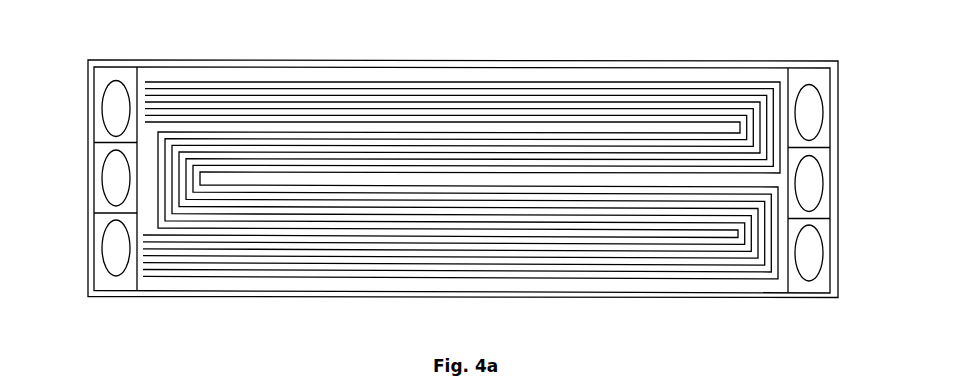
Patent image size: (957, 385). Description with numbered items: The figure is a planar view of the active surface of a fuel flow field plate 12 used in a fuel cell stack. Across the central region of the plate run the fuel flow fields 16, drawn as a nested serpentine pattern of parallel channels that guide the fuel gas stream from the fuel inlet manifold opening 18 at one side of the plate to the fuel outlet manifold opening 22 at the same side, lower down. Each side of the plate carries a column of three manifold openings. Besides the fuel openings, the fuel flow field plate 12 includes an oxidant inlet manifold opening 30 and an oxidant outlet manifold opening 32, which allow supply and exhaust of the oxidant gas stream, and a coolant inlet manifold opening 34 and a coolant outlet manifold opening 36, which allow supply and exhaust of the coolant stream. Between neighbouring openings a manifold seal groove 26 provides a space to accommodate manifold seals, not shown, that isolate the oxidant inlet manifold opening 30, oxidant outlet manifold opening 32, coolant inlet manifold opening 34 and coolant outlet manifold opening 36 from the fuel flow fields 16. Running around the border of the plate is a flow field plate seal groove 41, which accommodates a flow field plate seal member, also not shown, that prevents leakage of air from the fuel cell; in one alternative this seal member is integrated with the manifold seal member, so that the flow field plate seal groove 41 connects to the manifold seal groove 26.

The fuel flow field plate 12 is at (695, 317).
The fuel flow fields 16 is at (560, 267).
The fuel inlet manifold opening 18 is at (113, 112).
The fuel outlet manifold opening 22 is at (113, 250).
The manifold seal groove 26 is at (111, 143).
The oxidant inlet manifold opening 30 is at (813, 115).
The oxidant outlet manifold opening 32 is at (813, 253).
The coolant inlet manifold opening 34 is at (813, 183).
The coolant outlet manifold opening 36 is at (114, 181).
The flow field plate seal groove 41 is at (345, 63).